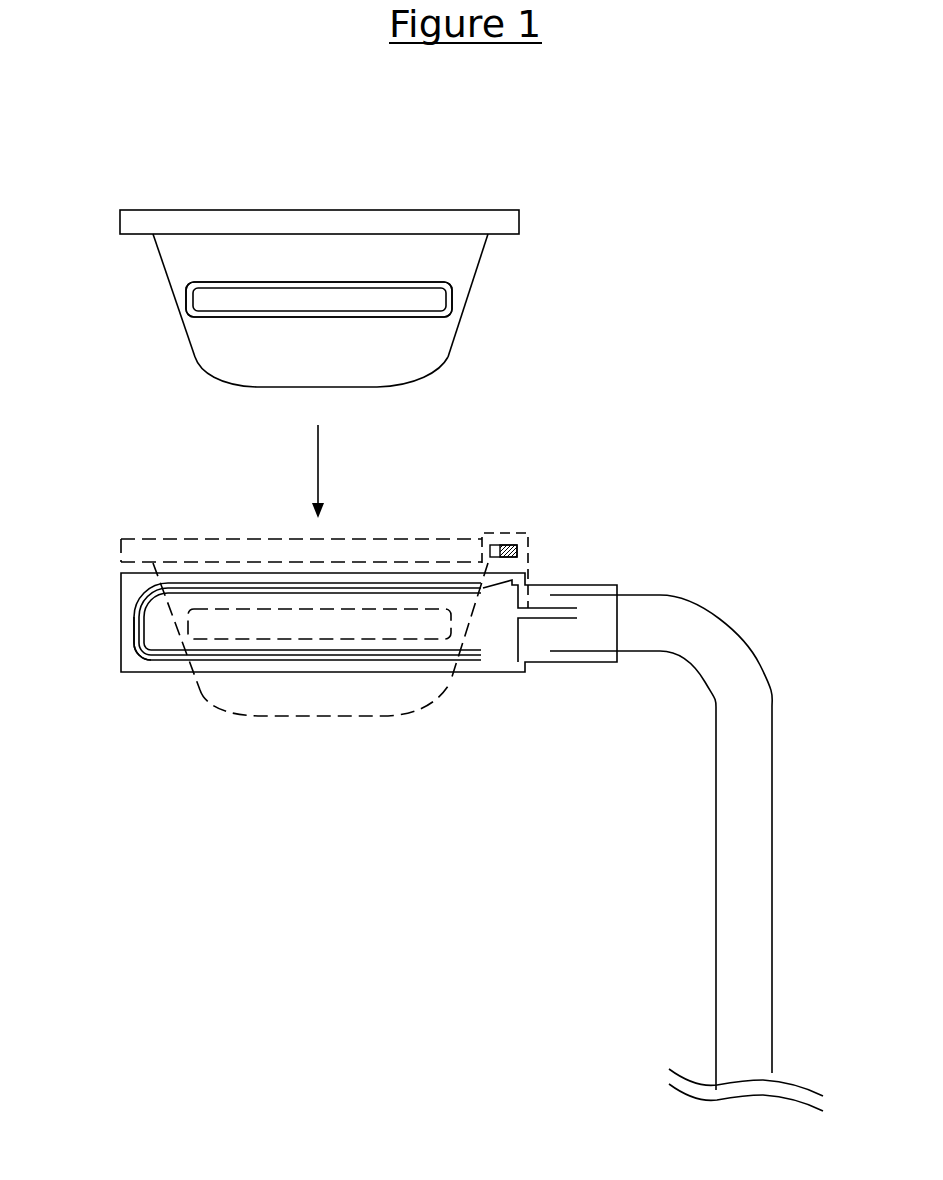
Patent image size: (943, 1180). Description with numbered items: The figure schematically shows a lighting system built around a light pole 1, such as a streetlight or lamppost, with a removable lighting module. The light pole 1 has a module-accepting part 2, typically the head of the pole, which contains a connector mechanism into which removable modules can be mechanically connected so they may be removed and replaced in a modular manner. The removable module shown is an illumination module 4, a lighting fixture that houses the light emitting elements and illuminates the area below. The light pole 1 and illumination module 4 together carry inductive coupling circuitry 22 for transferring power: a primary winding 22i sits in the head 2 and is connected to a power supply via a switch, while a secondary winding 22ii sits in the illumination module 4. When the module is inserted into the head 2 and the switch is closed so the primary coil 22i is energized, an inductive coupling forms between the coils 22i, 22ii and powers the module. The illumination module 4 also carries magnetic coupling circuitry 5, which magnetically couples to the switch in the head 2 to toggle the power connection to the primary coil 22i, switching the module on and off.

The light pole 1 is at (728, 637).
The module-accepting part 2 is at (510, 673).
The illumination module 4 is at (177, 210).
The magnetic coupling circuitry 5 is at (508, 530).
The inductive coupling circuitry 22 is at (153, 612).
The primary winding 22i is at (150, 658).
The secondary winding 22ii is at (186, 295).